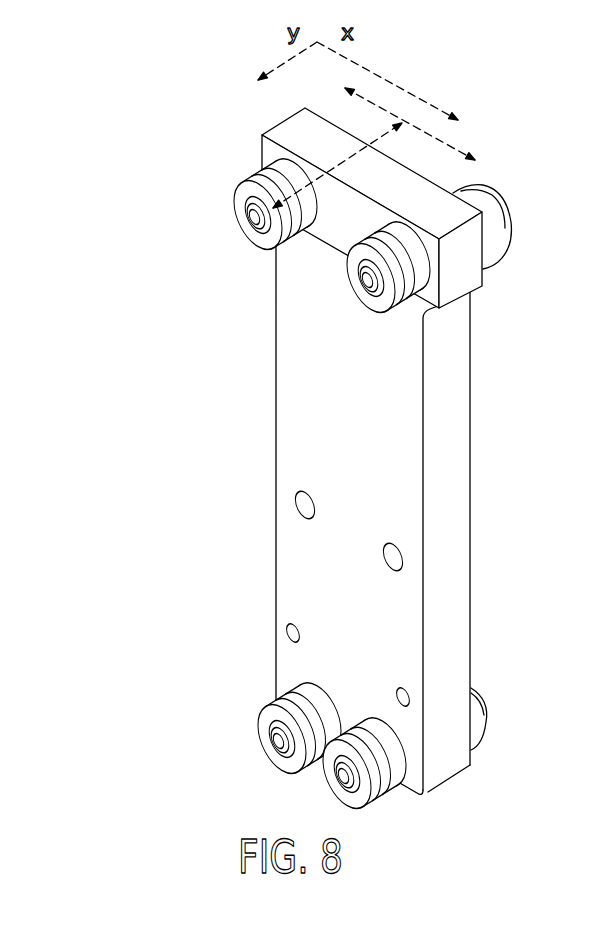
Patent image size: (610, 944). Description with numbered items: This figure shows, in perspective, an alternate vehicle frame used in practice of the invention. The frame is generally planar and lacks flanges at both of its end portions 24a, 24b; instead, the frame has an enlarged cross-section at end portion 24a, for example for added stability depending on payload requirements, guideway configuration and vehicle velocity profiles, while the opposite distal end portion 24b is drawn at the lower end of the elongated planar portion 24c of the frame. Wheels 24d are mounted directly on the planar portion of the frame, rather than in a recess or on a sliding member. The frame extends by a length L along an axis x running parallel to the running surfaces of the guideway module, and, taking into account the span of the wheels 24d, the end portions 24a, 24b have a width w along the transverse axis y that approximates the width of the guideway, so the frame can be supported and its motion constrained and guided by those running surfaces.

The end portion 24a is at (467, 275).
The end portion 24b is at (445, 760).
The elongated support body 24c is at (457, 487).
The rollers / wheels 24d is at (326, 111).
The width w is at (275, 166).
The length L is at (437, 141).